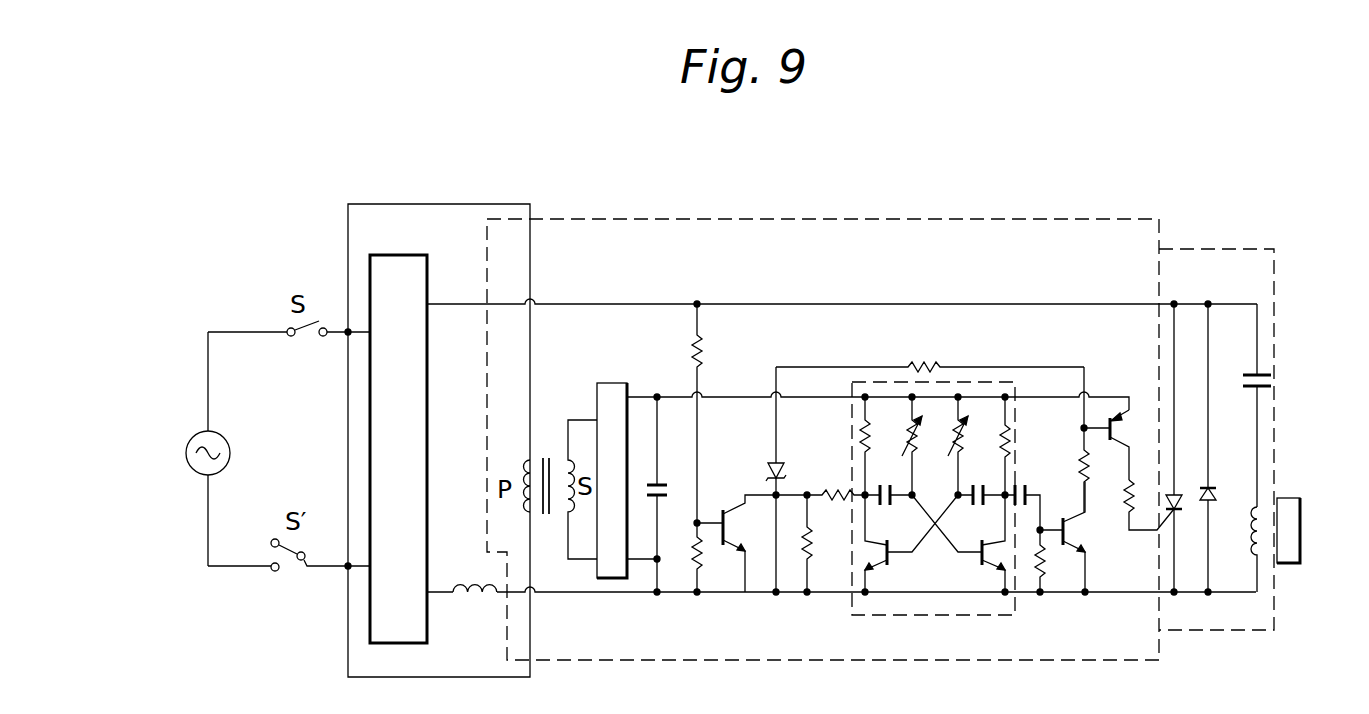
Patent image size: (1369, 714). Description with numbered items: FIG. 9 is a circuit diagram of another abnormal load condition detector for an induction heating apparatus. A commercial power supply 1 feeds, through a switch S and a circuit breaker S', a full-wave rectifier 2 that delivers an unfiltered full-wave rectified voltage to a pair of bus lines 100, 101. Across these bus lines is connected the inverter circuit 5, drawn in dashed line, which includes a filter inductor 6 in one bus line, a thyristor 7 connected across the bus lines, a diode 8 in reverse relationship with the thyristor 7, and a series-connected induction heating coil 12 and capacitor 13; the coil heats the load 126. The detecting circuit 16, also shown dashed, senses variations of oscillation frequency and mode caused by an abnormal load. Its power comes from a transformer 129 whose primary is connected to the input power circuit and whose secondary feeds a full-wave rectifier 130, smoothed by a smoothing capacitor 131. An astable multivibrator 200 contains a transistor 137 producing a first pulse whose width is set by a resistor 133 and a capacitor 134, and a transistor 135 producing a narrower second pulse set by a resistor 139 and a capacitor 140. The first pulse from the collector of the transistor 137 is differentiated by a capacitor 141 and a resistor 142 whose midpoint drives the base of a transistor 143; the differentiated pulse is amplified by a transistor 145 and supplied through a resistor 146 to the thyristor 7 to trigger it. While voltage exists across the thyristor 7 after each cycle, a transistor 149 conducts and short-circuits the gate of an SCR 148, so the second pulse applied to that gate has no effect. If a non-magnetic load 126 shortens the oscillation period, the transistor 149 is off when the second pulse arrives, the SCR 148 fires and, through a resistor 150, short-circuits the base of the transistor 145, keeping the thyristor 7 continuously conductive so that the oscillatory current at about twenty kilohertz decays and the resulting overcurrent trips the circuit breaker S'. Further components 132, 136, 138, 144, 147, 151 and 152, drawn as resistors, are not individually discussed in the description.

The commercial power supply 1 is at (218, 449).
The full-wave rectifier 2 is at (398, 449).
The inverter circuit 5 is at (1195, 249).
The filter inductor 6 is at (468, 598).
The thyristor 7 is at (1178, 495).
The diode 8 is at (1213, 490).
The induction heating coil 12 is at (1252, 543).
The capacitor 13 is at (1243, 381).
The abnormal load condition detecting circuit 16 is at (855, 219).
The bus line 100 is at (588, 304).
The bus line 101 is at (625, 594).
The load 126 is at (1300, 532).
The transformer 129 is at (549, 445).
The full-wave rectifier 130 is at (606, 382).
The smoothing capacitor 131 is at (664, 488).
The resistor 132 is at (863, 437).
The resistor 133 is at (912, 430).
The capacitor 134 is at (890, 488).
The transistor 135 is at (880, 575).
The resistor 136 is at (815, 560).
The transistor 137 is at (1003, 568).
The resistor 138 is at (1012, 440).
The resistor 139 is at (965, 430).
The capacitor 140 is at (963, 537).
The capacitor 141 is at (1025, 492).
The resistor 142 is at (1050, 558).
The transistor 143 is at (1086, 538).
The resistor 144 is at (1082, 462).
The transistor 145 is at (1122, 434).
The resistor 146 is at (1136, 485).
The resistor 147 is at (828, 491).
The SCR 148 is at (782, 460).
The transistor 149 is at (755, 548).
The resistor 150 is at (925, 367).
The resistor 151 is at (700, 355).
The resistor 152 is at (702, 560).
The astable multivibrator 200 is at (928, 615).